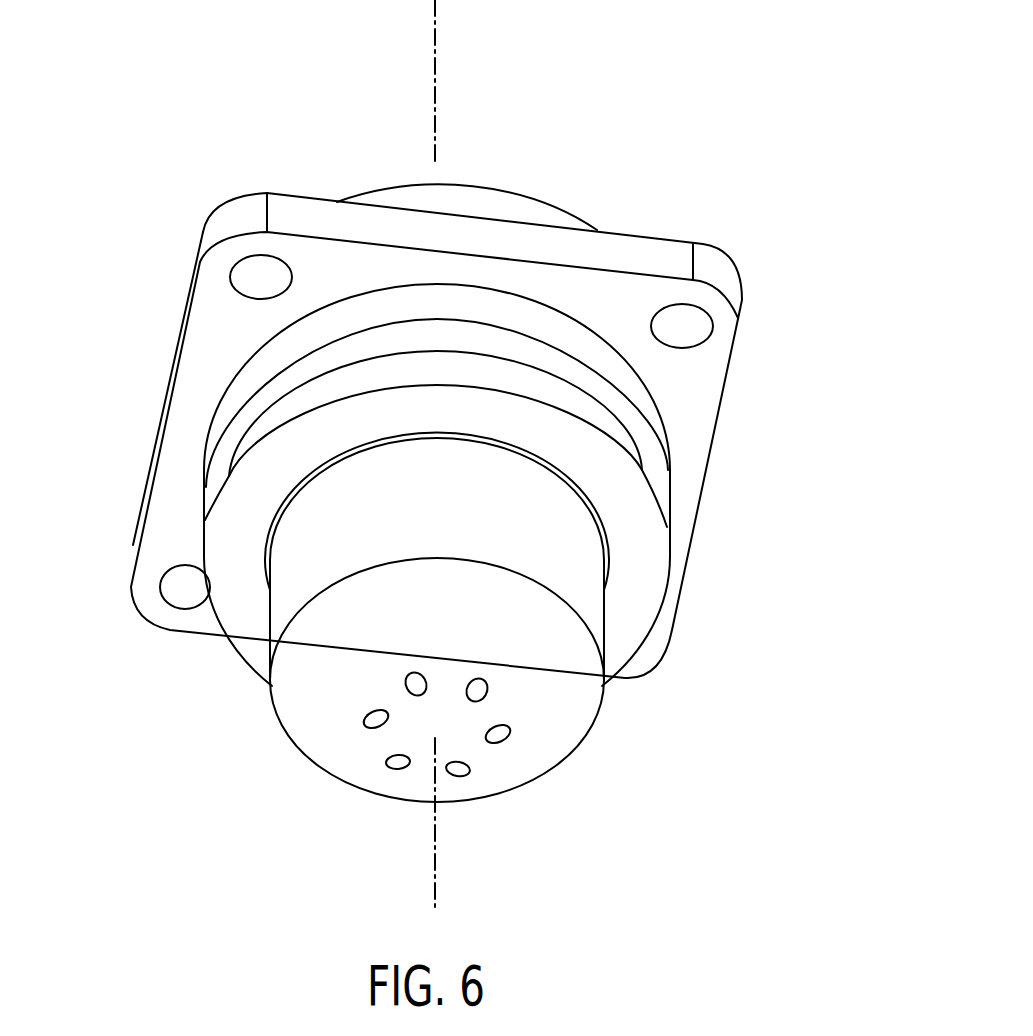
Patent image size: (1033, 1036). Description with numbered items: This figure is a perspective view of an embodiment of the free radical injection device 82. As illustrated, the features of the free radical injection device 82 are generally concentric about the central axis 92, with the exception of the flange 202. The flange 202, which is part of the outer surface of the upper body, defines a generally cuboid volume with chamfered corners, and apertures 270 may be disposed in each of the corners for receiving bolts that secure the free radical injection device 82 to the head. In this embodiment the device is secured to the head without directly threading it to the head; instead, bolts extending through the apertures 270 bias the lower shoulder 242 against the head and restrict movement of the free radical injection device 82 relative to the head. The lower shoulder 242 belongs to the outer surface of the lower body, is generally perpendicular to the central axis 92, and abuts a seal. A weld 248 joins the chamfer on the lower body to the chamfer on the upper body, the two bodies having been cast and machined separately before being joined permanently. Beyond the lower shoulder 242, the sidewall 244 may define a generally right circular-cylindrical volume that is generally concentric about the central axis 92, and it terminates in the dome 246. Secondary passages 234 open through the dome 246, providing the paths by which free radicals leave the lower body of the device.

The free radical injection device 82 is at (676, 102).
The first flange 202 is at (732, 422).
The apertures 270 is at (243, 258).
The lower shoulder 242 is at (650, 548).
The weld 248 is at (322, 392).
The sidewall 244 is at (297, 592).
The dome 246 is at (562, 737).
The secondary passages 234 is at (408, 673).
The central axis 92 is at (433, 873).